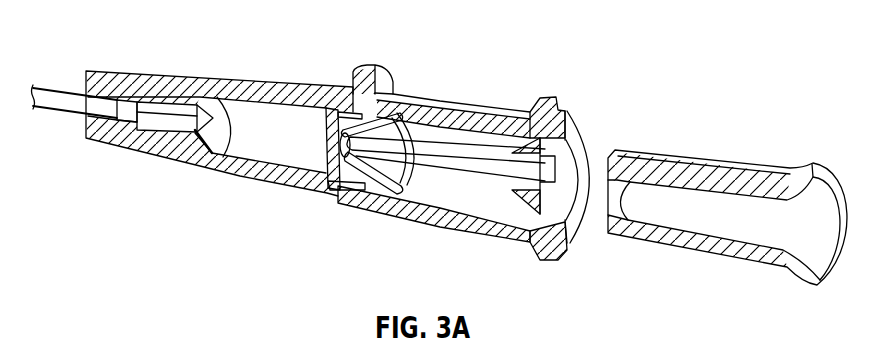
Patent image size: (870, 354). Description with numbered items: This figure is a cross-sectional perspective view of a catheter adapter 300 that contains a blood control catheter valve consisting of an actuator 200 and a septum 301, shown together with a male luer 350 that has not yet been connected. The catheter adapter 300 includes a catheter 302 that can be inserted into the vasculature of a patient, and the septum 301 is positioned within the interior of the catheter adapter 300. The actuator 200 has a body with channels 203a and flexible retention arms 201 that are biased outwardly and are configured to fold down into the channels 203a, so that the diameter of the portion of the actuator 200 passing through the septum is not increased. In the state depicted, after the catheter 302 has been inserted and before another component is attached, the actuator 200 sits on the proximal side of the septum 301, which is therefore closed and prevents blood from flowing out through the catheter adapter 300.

The actuator 200 is at (500, 112).
The flexible retention arms 201 is at (380, 118).
The channels 203a is at (440, 147).
The catheter adapter 300 is at (137, 92).
The septum 301 is at (330, 187).
The catheter 302 is at (60, 97).
The male luer 350 is at (718, 165).